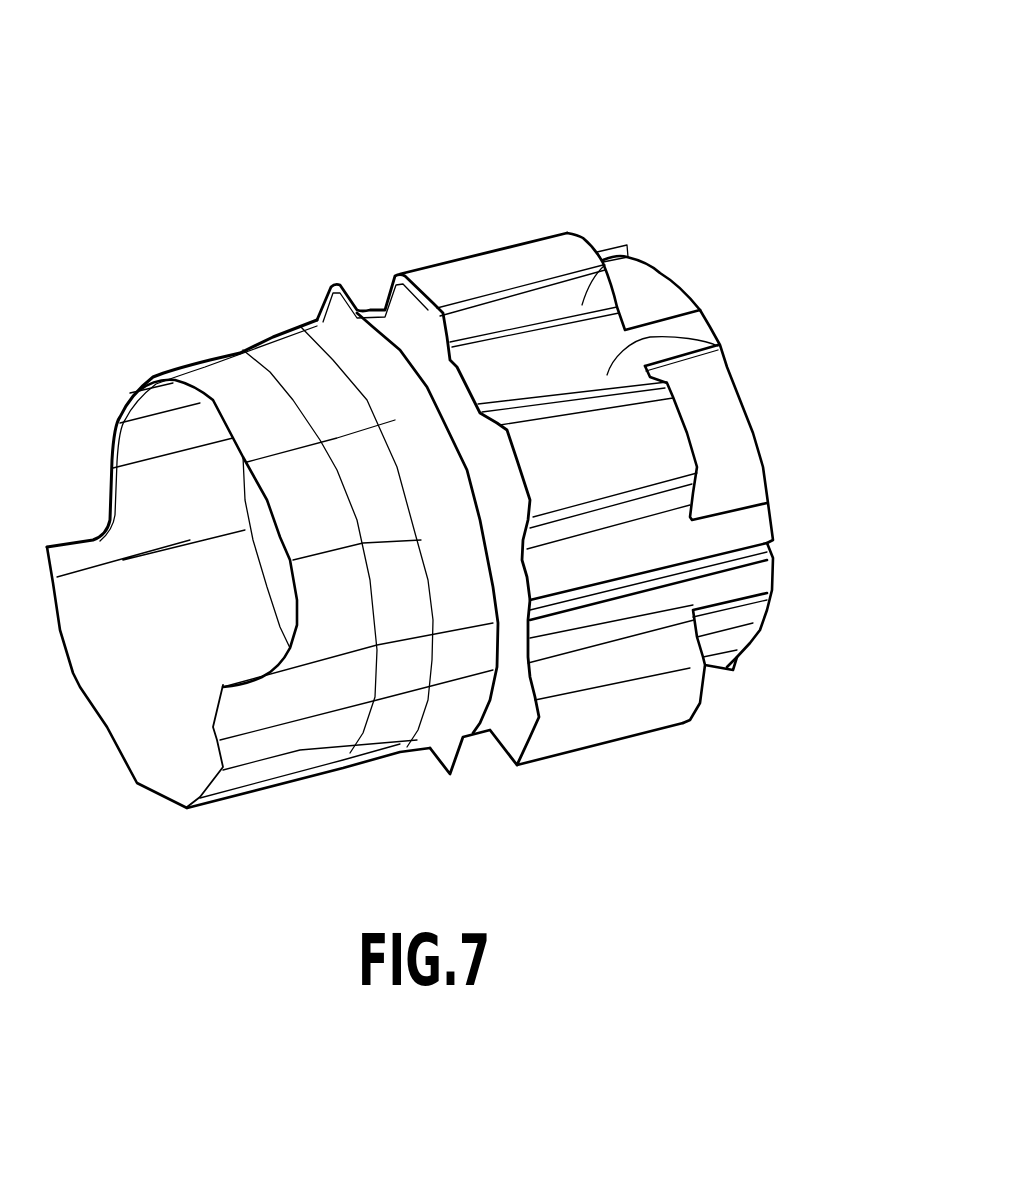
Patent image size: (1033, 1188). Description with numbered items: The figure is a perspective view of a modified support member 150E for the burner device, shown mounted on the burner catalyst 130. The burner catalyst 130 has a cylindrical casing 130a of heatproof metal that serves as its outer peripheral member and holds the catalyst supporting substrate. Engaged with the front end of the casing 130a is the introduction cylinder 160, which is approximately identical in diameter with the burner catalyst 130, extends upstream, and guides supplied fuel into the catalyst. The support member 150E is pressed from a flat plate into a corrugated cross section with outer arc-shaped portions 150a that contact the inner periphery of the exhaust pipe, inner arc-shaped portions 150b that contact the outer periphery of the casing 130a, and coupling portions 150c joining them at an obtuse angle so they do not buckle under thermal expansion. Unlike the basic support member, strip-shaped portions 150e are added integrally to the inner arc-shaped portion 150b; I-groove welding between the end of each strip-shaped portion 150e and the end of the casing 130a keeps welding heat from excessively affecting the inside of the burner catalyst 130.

The burner catalyst 130 is at (757, 648).
The cylindrical casing 130a is at (717, 450).
The support member 150E is at (567, 402).
The outer arc-shaped portion 150a is at (470, 243).
The inner arc-shaped portion 150b is at (720, 347).
The coupling portion 150c is at (633, 257).
The strip-shaped portion 150e is at (682, 340).
The introduction cylinder 160 is at (212, 365).